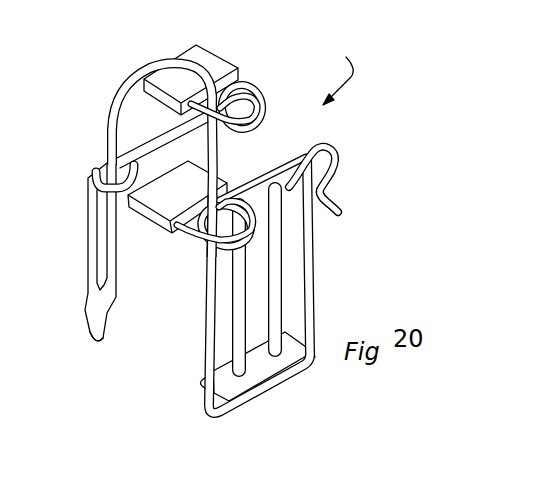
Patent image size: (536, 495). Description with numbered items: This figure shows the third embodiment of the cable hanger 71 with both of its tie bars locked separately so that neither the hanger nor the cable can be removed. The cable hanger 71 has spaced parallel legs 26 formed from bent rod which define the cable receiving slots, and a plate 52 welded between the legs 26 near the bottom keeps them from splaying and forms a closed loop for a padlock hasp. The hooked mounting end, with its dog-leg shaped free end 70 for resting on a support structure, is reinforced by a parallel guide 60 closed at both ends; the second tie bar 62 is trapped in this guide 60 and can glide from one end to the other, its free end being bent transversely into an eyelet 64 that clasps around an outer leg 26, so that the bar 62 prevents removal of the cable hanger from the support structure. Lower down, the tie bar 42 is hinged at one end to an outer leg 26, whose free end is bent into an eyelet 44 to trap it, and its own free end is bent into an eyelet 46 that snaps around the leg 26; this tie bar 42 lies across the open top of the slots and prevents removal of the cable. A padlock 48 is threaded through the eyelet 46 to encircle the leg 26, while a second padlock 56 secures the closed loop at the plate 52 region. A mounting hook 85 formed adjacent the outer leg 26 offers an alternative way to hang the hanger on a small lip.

The second padlock 56 is at (224, 56).
The cable hanger 71 is at (329, 81).
The second tie bar 62 is at (173, 125).
The eyelet 64 is at (266, 124).
The tie bar 42 is at (290, 167).
The eyelet 44 is at (333, 150).
The mounting hook 85 is at (339, 205).
The legs 26 is at (205, 352).
The guide 60 is at (87, 242).
The free end 70 is at (100, 342).
The eyelet 46 is at (208, 244).
The padlock 48 is at (153, 219).
The plate 52 is at (262, 374).